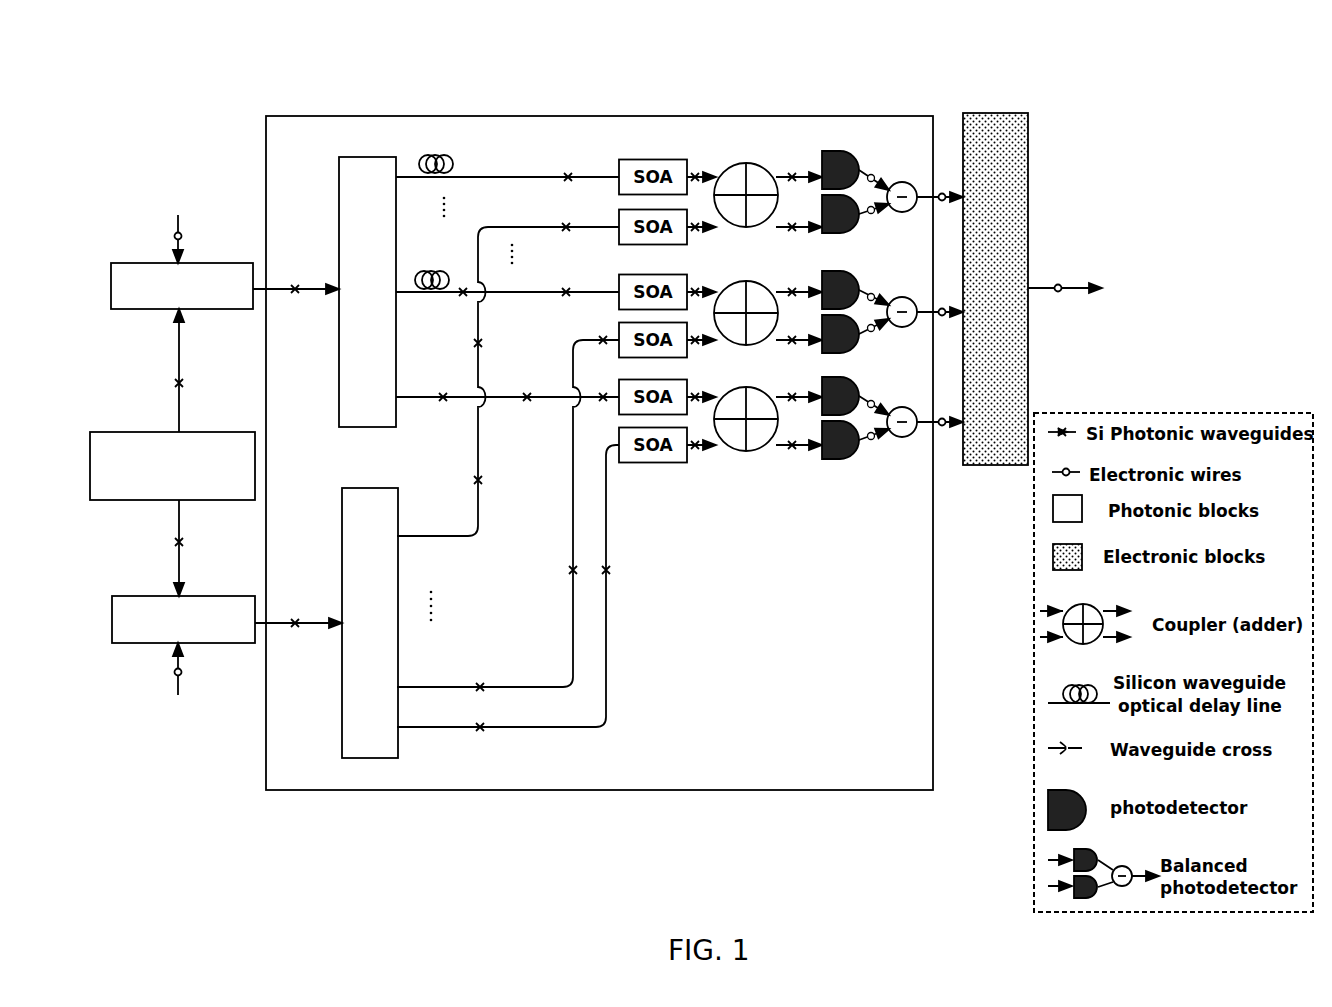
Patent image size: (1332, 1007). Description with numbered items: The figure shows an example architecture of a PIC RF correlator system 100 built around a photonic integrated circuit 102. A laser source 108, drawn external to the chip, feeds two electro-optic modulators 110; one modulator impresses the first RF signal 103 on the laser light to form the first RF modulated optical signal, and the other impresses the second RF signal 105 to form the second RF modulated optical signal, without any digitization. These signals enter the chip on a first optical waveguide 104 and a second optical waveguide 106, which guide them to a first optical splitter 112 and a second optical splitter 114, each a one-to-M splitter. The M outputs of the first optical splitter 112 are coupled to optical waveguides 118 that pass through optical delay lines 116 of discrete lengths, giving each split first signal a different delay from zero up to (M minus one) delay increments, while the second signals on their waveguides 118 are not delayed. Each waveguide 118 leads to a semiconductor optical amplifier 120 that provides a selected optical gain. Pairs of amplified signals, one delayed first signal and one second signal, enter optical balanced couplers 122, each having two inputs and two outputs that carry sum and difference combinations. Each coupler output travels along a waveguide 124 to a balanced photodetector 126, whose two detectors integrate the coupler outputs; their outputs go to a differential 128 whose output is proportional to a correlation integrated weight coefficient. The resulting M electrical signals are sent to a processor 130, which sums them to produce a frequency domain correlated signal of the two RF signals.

The PIC RF correlator system 100 is at (236, 82).
The photonic integrated circuit 102 is at (380, 116).
The first RF signal 103 is at (181, 232).
The first optical waveguide 104 is at (302, 293).
The second RF signal 105 is at (182, 657).
The second optical waveguide 106 is at (303, 627).
The laser source 108 is at (115, 500).
The electro-optic modulators 110 is at (115, 309).
The first optical splitter 112 is at (397, 358).
The second optical splitter 114 is at (397, 650).
The optical delay lines 116 is at (455, 162).
The optical waveguides 118 is at (490, 179).
The semiconductor optical amplifier 120 is at (655, 463).
The optical balanced couplers 122 is at (745, 451).
The waveguide 124 is at (782, 174).
The balanced photodetector 126 is at (834, 470).
The differential 128 is at (903, 438).
The processor 130 is at (1028, 157).